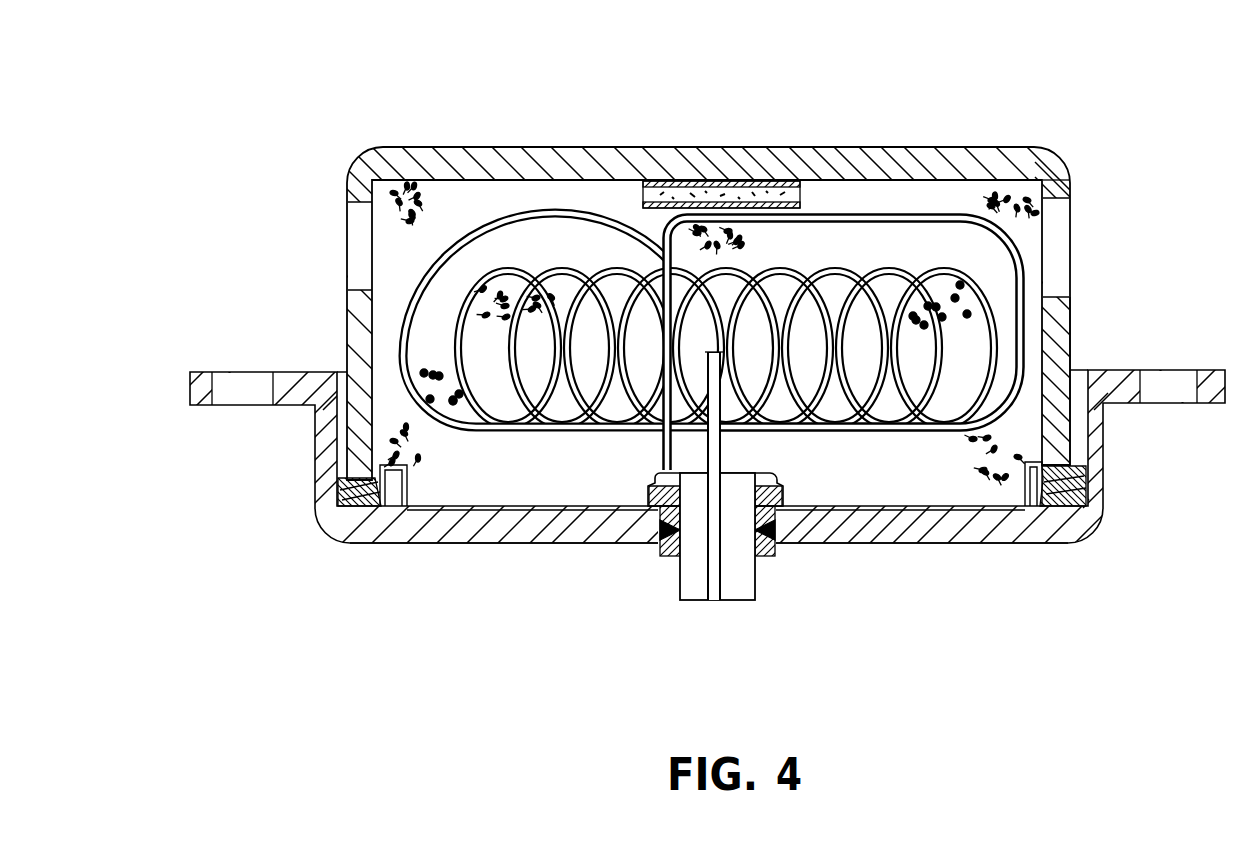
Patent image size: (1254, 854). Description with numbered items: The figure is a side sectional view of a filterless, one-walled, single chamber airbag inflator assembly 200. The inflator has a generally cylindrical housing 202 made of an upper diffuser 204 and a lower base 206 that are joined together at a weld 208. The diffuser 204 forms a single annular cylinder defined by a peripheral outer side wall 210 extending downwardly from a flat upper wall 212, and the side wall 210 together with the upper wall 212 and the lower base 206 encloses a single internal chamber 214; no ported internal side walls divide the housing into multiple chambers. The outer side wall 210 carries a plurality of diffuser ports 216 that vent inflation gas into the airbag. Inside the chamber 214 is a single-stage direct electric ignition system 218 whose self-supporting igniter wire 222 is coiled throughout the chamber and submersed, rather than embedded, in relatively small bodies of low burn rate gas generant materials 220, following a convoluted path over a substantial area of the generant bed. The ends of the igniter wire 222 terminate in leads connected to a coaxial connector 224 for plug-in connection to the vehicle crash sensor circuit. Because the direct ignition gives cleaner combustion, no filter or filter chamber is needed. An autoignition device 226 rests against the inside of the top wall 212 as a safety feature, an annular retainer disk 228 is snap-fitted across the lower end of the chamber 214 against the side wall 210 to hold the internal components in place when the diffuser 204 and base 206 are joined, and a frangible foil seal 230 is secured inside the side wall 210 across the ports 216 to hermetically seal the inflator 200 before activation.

The inflator assembly 200 is at (338, 213).
The housing 202 is at (386, 148).
The upper diffuser 204 is at (455, 147).
The lower base 206 is at (410, 545).
The weld 208 is at (343, 473).
The peripheral outer side wall 210 is at (1068, 331).
The flat upper wall 212 is at (996, 164).
The single internal chamber 214 is at (540, 488).
The diffuser ports 216 is at (1058, 236).
The direct electric ignition system 218 is at (830, 212).
The gas generant materials 220 is at (984, 468).
The igniter wire 222 is at (545, 210).
The coaxial connector 224 is at (700, 590).
The autoignition device 226 is at (650, 180).
The annular retainer disk 228 is at (838, 512).
The frangible foil seal 230 is at (367, 275).